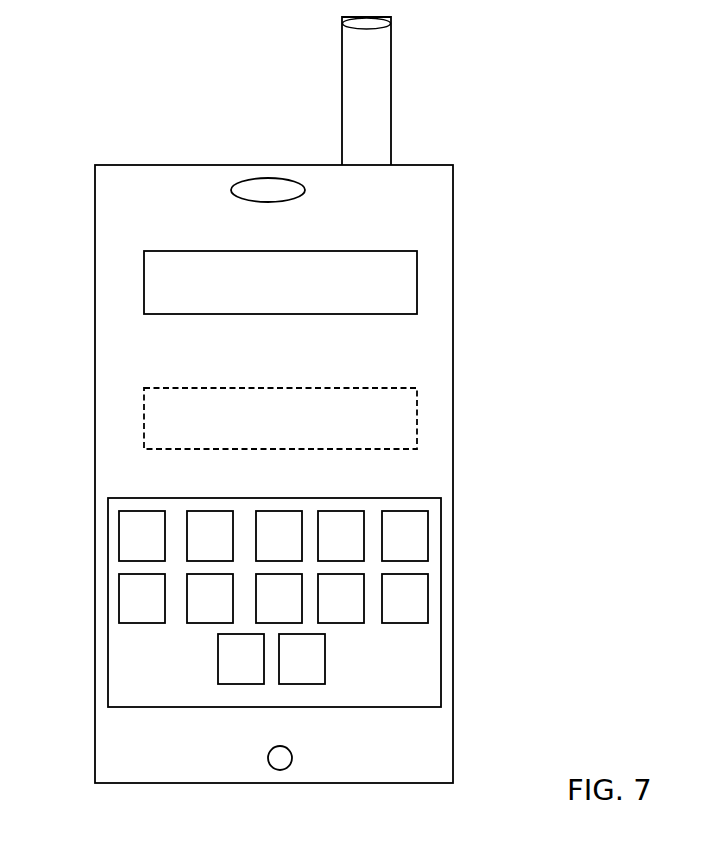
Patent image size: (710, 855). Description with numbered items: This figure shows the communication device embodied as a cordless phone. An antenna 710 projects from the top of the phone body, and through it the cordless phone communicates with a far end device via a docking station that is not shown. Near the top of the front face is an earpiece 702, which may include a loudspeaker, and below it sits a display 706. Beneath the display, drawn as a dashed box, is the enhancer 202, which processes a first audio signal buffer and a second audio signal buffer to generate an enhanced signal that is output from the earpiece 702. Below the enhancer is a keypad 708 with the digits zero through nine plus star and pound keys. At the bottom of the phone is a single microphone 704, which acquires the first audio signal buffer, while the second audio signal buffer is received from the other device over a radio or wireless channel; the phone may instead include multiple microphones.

The antenna 710 is at (394, 66).
The earpiece 702 is at (305, 190).
The display 706 is at (260, 310).
The enhancer 202 is at (260, 432).
The keypad 708 is at (442, 603).
The microphone 704 is at (292, 758).